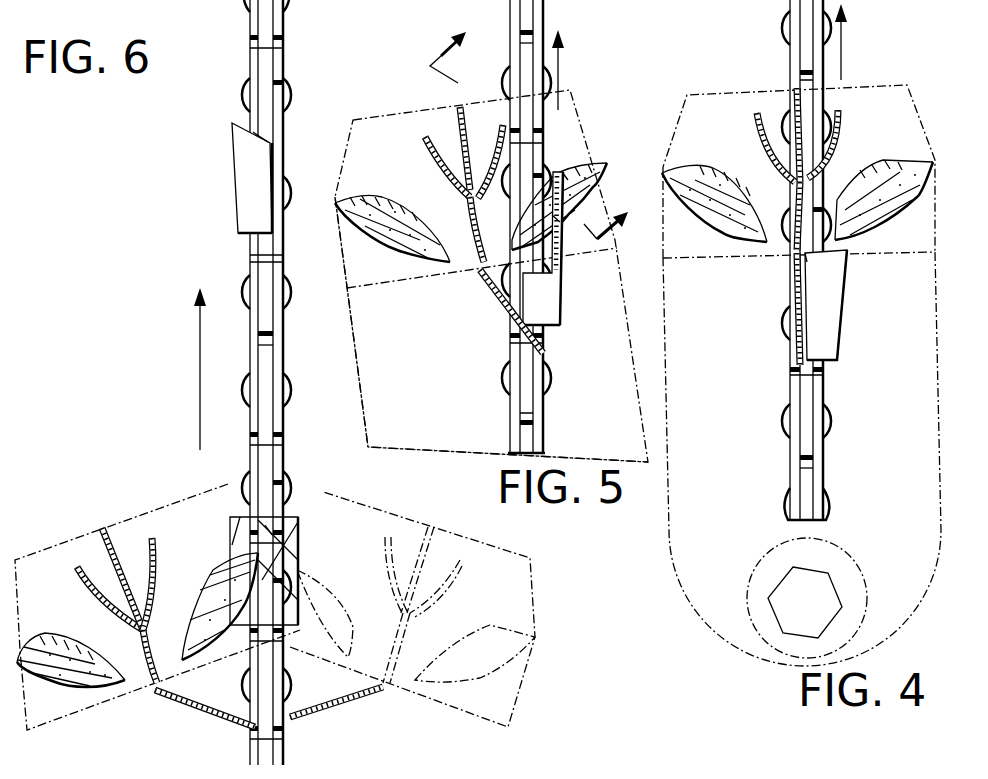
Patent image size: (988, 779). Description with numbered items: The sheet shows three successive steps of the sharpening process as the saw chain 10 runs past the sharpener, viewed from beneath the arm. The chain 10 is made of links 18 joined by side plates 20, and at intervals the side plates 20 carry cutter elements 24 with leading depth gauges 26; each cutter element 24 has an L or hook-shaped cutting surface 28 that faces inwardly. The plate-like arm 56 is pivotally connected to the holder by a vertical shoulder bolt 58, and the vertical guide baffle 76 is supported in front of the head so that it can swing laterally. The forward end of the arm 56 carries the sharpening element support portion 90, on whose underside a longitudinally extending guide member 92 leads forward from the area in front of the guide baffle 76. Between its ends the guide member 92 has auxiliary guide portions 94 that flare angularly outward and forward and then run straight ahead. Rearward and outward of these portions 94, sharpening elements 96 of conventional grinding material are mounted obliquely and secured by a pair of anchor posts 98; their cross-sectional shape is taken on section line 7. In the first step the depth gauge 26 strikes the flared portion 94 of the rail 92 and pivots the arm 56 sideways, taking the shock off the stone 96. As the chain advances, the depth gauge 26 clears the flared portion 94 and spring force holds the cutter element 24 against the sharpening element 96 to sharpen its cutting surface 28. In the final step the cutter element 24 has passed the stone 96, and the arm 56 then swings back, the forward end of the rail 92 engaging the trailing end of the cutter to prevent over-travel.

In FIG. 5, the section line 7- 7 is at (530, 138).
In FIG. 6, the saw chain 10 is at (283, 59).
In FIG. 5, the saw chain 10 is at (544, 25).
In FIG. 4, the saw chain 10 is at (790, 10).
In FIG. 6, the links 18 is at (267, 320).
In FIG. 5, the links 18 is at (527, 15).
In FIG. 4, the links 18 is at (808, 482).
In FIG. 6, the side plates 20 is at (278, 263).
In FIG. 5, the side plates 20 is at (536, 417).
In FIG. 4, the side plates 20 is at (817, 57).
In FIG. 6, the cutter elements 24 is at (248, 183).
In FIG. 5, the cutter elements 24 is at (552, 291).
In FIG. 4, the cutter elements 24 is at (832, 300).
In FIG. 6, the depth gauges 26 is at (256, 66).
In FIG. 5, the depth gauges 26 is at (540, 155).
In FIG. 4, the depth gauges 26 is at (817, 192).
In FIG. 6, the cutting surfaces 28 is at (253, 132).
In FIG. 5, the cutting surfaces 28 is at (568, 219).
In FIG. 4, the cutting surfaces 28 is at (806, 262).
In FIG. 5, the arm 56 is at (360, 405).
In FIG. 4, the arm 56 is at (668, 520).
In FIG. 4, the shoulder bolt 58 is at (780, 582).
In FIG. 6, the guide baffle 76 is at (198, 709).
In FIG. 5, the guide baffle 76 is at (501, 304).
In FIG. 4, the guide baffle 76 is at (795, 328).
In FIG. 6, the sharpening element support portion 90 is at (157, 506).
In FIG. 5, the sharpening element support portion 90 is at (578, 110).
In FIG. 4, the sharpening element support portion 90 is at (722, 90).
In FIG. 6, the guide member 92 is at (149, 689).
In FIG. 5, the guide member 92 is at (478, 258).
In FIG. 4, the guide member 92 is at (797, 247).
In FIG. 6, the auxiliary guide portions 94 is at (149, 539).
In FIG. 5, the auxiliary guide portions 94 is at (504, 125).
In FIG. 4, the auxiliary guide portions 94 is at (832, 107).
In FIG. 6, the sharpening elements 96 is at (63, 681).
In FIG. 5, the sharpening elements 96 is at (358, 236).
In FIG. 4, the sharpening elements 96 is at (681, 201).
In FIG. 6, the anchor posts 98 is at (62, 638).
In FIG. 5, the anchor posts 98 is at (404, 204).
In FIG. 4, the anchor posts 98 is at (713, 180).